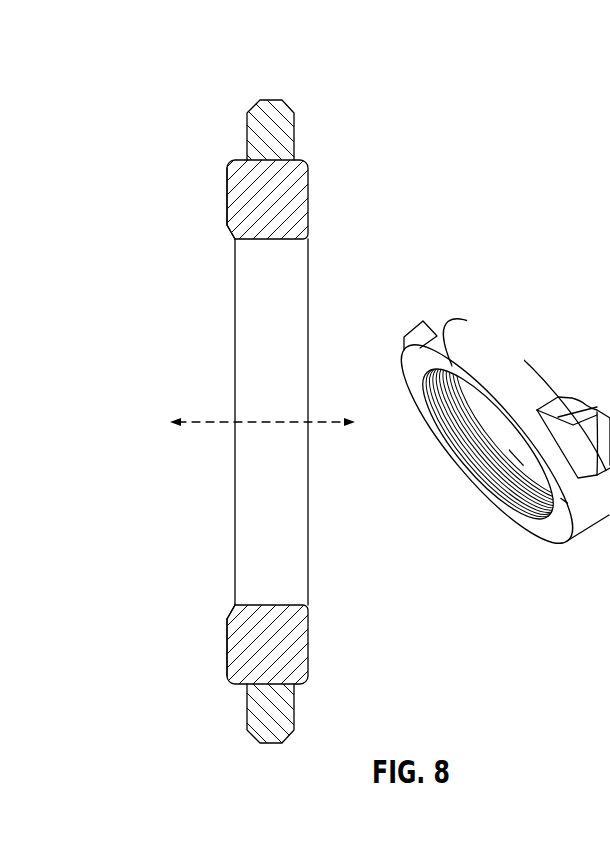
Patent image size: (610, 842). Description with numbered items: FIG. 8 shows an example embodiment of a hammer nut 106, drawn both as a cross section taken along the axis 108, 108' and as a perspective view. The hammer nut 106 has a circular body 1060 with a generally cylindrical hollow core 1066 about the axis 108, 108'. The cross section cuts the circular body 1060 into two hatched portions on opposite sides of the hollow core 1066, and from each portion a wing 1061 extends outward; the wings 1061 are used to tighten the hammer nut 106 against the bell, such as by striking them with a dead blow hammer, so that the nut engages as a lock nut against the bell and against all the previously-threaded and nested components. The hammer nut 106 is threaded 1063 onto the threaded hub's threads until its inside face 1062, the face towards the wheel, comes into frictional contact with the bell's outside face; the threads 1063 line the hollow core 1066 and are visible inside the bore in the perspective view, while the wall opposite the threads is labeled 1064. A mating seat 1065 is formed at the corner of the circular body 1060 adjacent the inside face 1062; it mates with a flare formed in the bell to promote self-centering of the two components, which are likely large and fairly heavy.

The hammer nut 106 is at (123, 63).
The circular body 1060 is at (298, 213).
The wings 1061 is at (248, 135).
The inside face 1062 is at (227, 178).
The threads 1063 is at (255, 242).
The outer wall of nut body 1064 is at (310, 550).
The mating seat 1065 is at (233, 235).
The hollow core 1066 is at (253, 526).
The axis 108 is at (195, 406).
The axis 108' is at (330, 405).